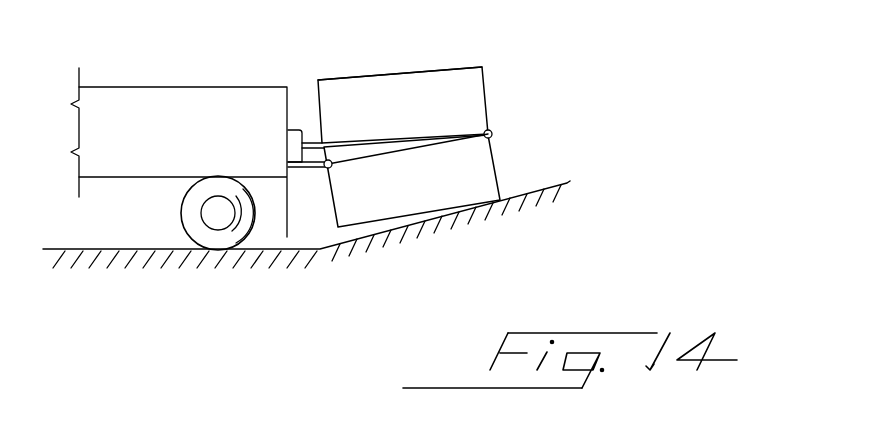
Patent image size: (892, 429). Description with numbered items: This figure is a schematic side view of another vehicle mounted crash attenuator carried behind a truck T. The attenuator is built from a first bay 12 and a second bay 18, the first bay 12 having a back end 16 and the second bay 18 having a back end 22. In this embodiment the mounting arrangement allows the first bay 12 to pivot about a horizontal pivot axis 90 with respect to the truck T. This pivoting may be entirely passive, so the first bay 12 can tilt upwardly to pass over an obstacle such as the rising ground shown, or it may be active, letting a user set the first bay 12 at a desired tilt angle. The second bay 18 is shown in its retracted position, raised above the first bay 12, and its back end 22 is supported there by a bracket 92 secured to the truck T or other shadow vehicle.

The truck T is at (200, 139).
The first bay 12 is at (452, 193).
The back end 16 is at (492, 157).
The second bay 18 is at (407, 119).
The back end 22 is at (317, 82).
The horizontal pivot axis 90 is at (328, 168).
The bracket 92 is at (325, 149).